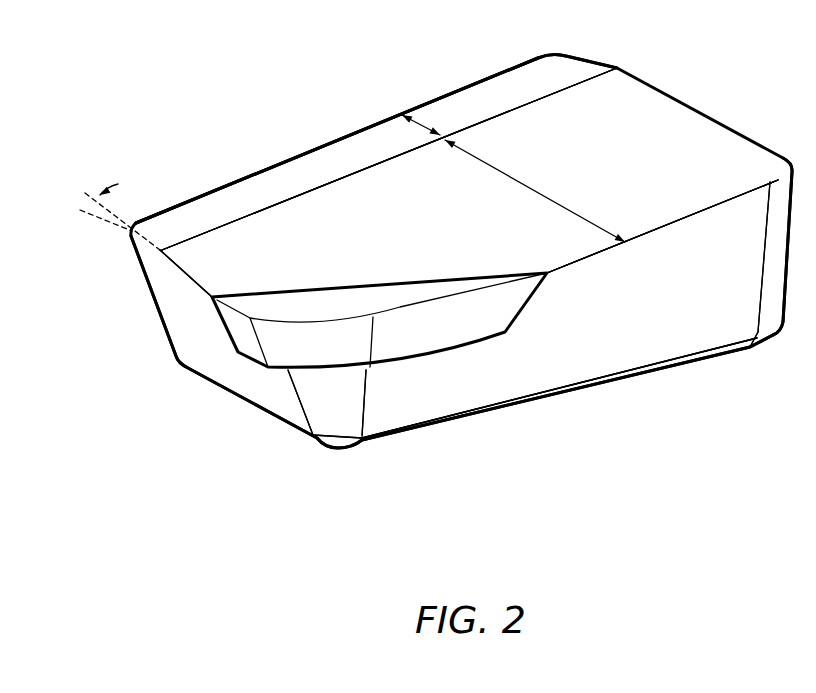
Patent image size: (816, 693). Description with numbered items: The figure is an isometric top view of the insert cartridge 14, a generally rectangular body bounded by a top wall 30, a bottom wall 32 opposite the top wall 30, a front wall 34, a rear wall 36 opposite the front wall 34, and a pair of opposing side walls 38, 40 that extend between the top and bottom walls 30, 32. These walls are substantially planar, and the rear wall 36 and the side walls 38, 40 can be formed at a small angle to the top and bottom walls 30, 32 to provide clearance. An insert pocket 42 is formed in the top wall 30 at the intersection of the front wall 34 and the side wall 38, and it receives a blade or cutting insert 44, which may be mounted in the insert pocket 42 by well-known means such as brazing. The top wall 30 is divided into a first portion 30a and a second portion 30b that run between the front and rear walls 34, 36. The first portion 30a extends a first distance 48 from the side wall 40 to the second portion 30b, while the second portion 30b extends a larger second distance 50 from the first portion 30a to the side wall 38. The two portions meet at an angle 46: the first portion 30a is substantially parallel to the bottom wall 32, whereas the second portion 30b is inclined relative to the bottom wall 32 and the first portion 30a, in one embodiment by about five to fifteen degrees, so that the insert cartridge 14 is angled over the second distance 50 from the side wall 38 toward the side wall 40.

The insert cartridge 14 is at (232, 83).
The top wall 30 is at (617, 110).
The first portion of the top wall 30a is at (472, 105).
The second portion of the top wall 30b is at (640, 138).
The bottom wall 32 is at (582, 395).
The front wall 34 is at (190, 340).
The rear wall 36 is at (747, 128).
The side wall 38 is at (675, 325).
The side wall 40 is at (347, 130).
The insert pocket 42 is at (280, 373).
The cutting insert 44 is at (407, 338).
The angle 46 is at (90, 218).
The first distance 48 is at (422, 128).
The second distance 50 is at (560, 203).